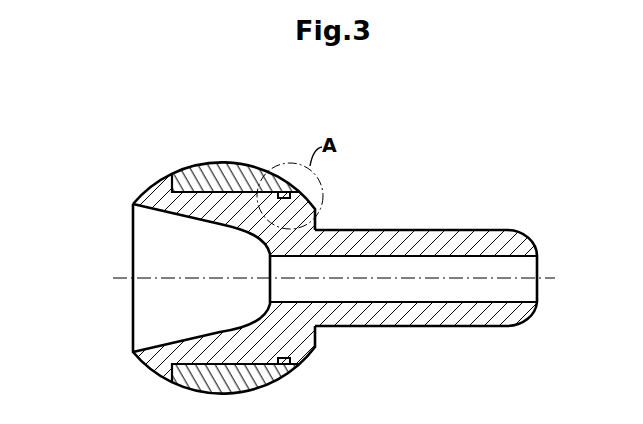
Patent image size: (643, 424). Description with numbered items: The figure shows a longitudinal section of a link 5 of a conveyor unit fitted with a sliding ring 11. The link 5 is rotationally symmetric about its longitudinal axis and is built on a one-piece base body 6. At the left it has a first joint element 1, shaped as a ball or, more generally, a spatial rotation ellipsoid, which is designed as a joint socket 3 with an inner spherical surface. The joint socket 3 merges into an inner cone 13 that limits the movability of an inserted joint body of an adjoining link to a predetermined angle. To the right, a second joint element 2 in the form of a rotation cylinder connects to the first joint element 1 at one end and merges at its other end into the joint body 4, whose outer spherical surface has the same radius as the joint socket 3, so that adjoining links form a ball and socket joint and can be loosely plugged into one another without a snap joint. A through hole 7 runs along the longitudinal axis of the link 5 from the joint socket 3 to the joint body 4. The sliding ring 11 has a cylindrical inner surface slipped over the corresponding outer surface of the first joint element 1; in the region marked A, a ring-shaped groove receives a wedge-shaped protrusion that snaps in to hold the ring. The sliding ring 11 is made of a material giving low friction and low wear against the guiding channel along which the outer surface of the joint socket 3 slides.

The first joint element 1 is at (155, 278).
The joint socket 3 is at (212, 265).
The second joint element 2 is at (562, 245).
The joint body 4 is at (533, 229).
The link 5 is at (349, 175).
The base body 6 is at (374, 230).
The through hole 7 is at (366, 296).
The sliding ring 11 is at (196, 172).
The inner cone 13 is at (147, 346).